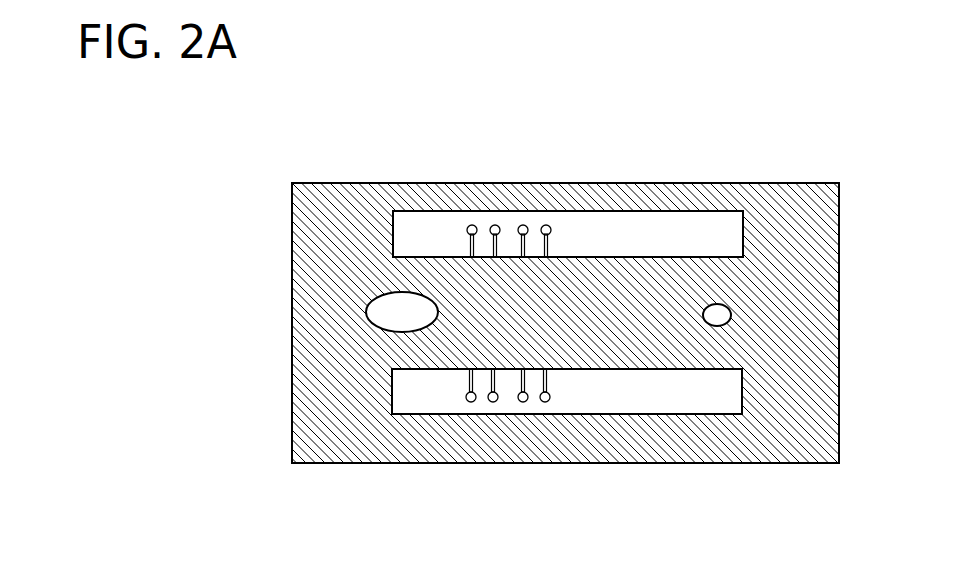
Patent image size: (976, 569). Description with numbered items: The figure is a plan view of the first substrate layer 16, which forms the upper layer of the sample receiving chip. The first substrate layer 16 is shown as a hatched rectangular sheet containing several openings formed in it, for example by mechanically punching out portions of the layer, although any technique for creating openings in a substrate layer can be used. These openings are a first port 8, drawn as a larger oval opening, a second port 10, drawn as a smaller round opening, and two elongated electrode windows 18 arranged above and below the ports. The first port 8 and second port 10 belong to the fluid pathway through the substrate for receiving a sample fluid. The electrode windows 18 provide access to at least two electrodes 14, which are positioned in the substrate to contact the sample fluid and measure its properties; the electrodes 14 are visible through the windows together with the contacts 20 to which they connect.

The first substrate layer 16 is at (360, 256).
The electrode windows 18 is at (444, 211).
The first port 8 is at (373, 297).
The second port 10 is at (727, 305).
The electrodes 14 is at (548, 376).
The contacts 20 is at (545, 403).